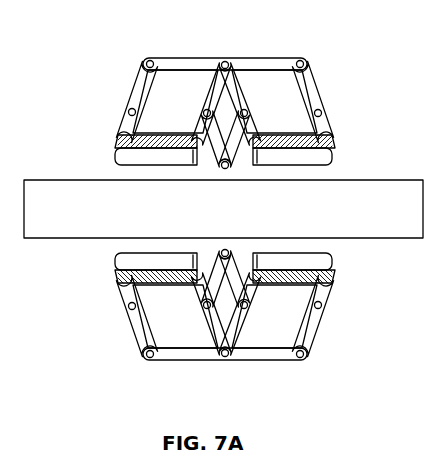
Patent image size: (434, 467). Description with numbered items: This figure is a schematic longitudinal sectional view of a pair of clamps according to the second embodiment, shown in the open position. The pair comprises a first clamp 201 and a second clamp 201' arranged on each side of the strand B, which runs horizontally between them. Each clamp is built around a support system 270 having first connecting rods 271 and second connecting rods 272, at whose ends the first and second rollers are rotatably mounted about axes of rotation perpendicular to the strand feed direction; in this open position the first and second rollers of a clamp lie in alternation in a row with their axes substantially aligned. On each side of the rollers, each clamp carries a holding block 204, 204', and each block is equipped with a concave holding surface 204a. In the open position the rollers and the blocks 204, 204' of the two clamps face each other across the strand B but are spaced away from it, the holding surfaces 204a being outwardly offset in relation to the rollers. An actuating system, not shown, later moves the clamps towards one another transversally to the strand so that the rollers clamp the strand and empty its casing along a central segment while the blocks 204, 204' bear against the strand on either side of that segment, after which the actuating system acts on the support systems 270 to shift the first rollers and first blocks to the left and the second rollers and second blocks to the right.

The strand B is at (52, 185).
The first clamp 201 is at (326, 83).
The second clamp 201' is at (339, 329).
The holding block 204 is at (319, 120).
The holding block 204' is at (323, 284).
The concave holding surface 204a is at (338, 162).
The support system 270 is at (140, 93).
The first connecting rods 271 is at (205, 93).
The second connecting rods 272 is at (240, 93).